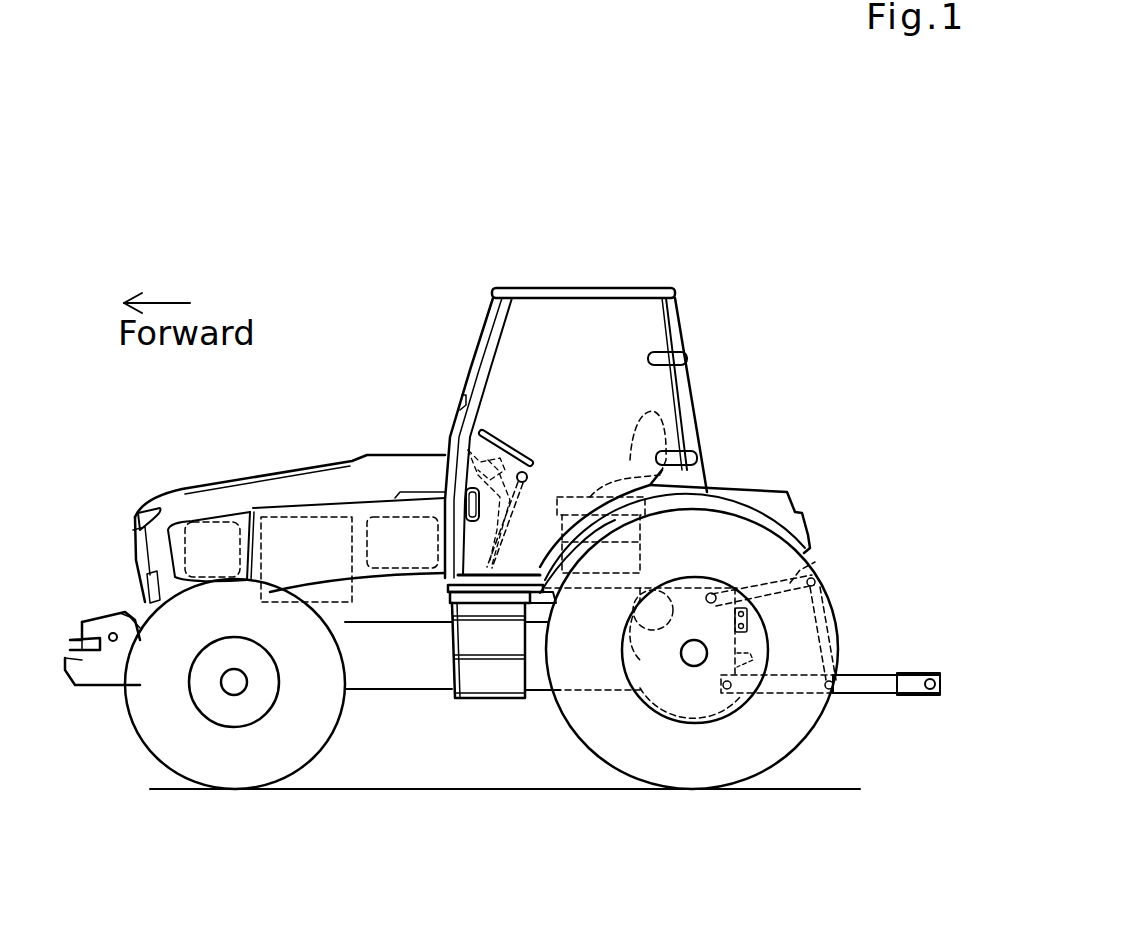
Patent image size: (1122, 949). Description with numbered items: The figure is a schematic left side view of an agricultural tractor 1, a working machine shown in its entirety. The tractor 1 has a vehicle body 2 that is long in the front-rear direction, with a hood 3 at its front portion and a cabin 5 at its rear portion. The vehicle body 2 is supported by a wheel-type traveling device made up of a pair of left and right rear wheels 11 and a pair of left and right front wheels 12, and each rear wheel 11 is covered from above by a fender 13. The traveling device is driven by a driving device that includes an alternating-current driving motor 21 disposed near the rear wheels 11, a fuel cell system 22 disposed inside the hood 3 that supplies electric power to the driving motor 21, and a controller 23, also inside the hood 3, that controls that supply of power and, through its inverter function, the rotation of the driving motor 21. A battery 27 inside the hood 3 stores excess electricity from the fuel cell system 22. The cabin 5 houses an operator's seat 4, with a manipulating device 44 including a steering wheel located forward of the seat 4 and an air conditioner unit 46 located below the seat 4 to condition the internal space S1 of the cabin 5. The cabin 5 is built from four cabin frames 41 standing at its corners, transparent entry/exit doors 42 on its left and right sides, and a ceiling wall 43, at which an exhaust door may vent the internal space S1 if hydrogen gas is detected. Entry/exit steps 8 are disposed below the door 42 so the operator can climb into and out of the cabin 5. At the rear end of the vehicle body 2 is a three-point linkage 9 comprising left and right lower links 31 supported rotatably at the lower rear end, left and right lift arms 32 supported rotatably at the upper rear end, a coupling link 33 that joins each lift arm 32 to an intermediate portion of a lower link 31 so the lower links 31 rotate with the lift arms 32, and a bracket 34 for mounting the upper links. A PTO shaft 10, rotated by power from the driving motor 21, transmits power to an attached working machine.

The tractor 1 is at (316, 290).
The vehicle body 2 is at (403, 668).
The hood 3 is at (218, 482).
The operator's seat 4 is at (588, 497).
The cabin 5 is at (535, 414).
The entry/exit step 8 is at (468, 700).
The three-point linkage 9 is at (829, 611).
The PTO shaft 10 is at (750, 655).
The rear wheels 11 is at (790, 740).
The front wheels 12 is at (175, 738).
The fender 13 is at (781, 487).
The driving motor 21 is at (620, 667).
The fuel cell system 22 is at (307, 512).
The controller 23 is at (385, 512).
The battery 27 is at (215, 522).
The lower links 31 is at (886, 662).
The lift arms 32 is at (815, 562).
The coupling link 33 is at (828, 640).
The bracket 34 is at (820, 597).
The cabin frames 41 is at (473, 381).
The entry/exit doors 42 is at (645, 395).
The ceiling wall 43 is at (668, 288).
The manipulating device 44 is at (538, 427).
The air conditioner unit 46 is at (610, 560).
The internal space S1 is at (547, 387).